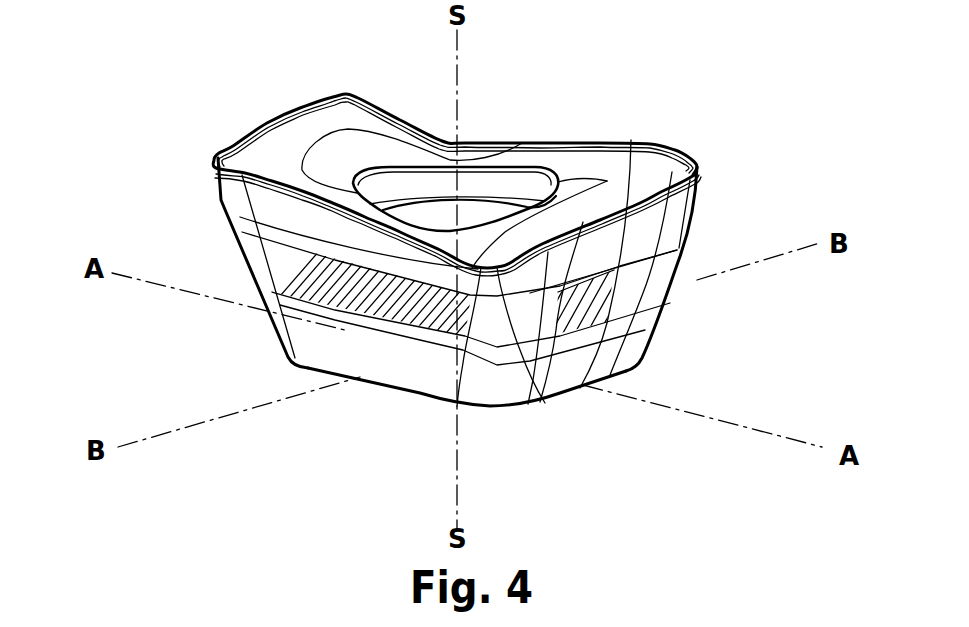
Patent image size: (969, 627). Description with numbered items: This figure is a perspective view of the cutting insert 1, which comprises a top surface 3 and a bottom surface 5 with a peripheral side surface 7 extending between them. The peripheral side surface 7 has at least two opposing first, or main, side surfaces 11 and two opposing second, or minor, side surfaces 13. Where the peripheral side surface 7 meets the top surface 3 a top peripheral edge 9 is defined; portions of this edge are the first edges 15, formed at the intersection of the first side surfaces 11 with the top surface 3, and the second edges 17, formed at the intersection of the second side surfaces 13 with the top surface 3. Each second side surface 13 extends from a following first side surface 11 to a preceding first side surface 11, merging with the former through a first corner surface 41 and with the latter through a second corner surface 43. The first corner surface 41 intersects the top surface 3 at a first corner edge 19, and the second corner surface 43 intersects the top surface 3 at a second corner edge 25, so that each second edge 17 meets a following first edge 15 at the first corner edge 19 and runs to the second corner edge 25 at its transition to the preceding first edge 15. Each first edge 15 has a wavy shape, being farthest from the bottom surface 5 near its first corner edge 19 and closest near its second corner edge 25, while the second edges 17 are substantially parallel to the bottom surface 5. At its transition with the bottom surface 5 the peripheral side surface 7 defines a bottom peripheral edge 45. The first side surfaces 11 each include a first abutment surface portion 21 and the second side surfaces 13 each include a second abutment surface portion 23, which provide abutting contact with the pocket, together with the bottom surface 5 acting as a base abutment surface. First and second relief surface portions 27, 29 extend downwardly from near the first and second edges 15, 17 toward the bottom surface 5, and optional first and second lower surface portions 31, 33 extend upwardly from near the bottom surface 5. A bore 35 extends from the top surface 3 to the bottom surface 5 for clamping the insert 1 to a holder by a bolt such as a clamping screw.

The cutting insert 1 is at (115, 74).
The top surface 3 is at (375, 152).
The bottom surface 5 is at (388, 390).
The peripheral side surface 7 is at (674, 235).
The top peripheral edge 9 is at (263, 172).
The first side surface 11 is at (322, 313).
The second side surface 13 is at (643, 282).
The first edge 15 is at (522, 142).
The second edge 17 is at (283, 118).
The first corner edge 19 is at (700, 163).
The first abutment surface portion 21 is at (370, 366).
The second abutment surface portion 23 is at (583, 307).
The second corner edge 25 is at (342, 90).
The first relief surface portion 27 is at (295, 204).
The second relief surface portion 29 is at (631, 140).
The first lower surface portion 31 is at (408, 363).
The second lower surface portion 33 is at (623, 349).
The bore 35 is at (473, 217).
The first corner surface 41 is at (255, 261).
The second corner surface 43 is at (495, 320).
The bottom peripheral edge 45 is at (440, 380).